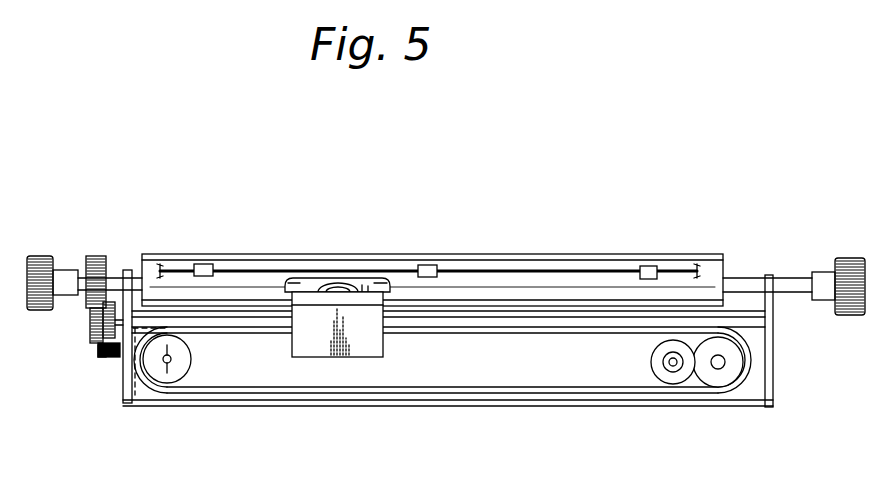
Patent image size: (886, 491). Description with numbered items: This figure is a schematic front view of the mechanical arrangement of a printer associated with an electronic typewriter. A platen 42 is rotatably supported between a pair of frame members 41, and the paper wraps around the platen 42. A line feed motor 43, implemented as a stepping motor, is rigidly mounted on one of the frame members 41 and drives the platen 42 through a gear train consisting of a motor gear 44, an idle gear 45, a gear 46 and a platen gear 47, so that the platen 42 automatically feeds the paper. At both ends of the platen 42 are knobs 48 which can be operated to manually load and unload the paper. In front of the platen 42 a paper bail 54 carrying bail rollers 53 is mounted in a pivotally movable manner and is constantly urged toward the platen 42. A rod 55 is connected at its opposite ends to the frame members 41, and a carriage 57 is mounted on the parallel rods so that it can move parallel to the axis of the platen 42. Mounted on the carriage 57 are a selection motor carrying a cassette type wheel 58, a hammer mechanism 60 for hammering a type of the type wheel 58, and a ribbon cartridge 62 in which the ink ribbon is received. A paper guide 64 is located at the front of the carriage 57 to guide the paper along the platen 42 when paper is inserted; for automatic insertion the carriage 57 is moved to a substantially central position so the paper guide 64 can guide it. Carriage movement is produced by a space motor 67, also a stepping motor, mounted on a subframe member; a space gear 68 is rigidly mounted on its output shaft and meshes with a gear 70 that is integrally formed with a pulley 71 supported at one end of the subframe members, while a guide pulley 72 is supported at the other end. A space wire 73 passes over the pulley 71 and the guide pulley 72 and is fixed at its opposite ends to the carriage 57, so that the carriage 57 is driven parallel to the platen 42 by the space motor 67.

The frame member 41 is at (128, 270).
The platen 42 is at (525, 285).
The line feed motor 43 is at (145, 397).
The motor gear 44 is at (113, 357).
The idle gear 45 is at (100, 358).
The gear 46 is at (90, 340).
The platen gear 47 is at (96, 256).
The knob 48 is at (43, 256).
The bail roller 53 is at (428, 266).
The paper bail 54 is at (485, 270).
The rod 55 is at (437, 320).
The carriage 57 is at (345, 358).
The type wheel 58 is at (330, 287).
The hammer mechanism 60 is at (338, 290).
The ribbon cartridge 62 is at (375, 290).
The paper guide 64 is at (300, 281).
The space motor 67 is at (657, 367).
The space gear 68 is at (674, 372).
The gear 70 is at (730, 370).
The pulley 71 is at (740, 390).
The guide pulley 72 is at (180, 368).
The space wire 73 is at (268, 386).